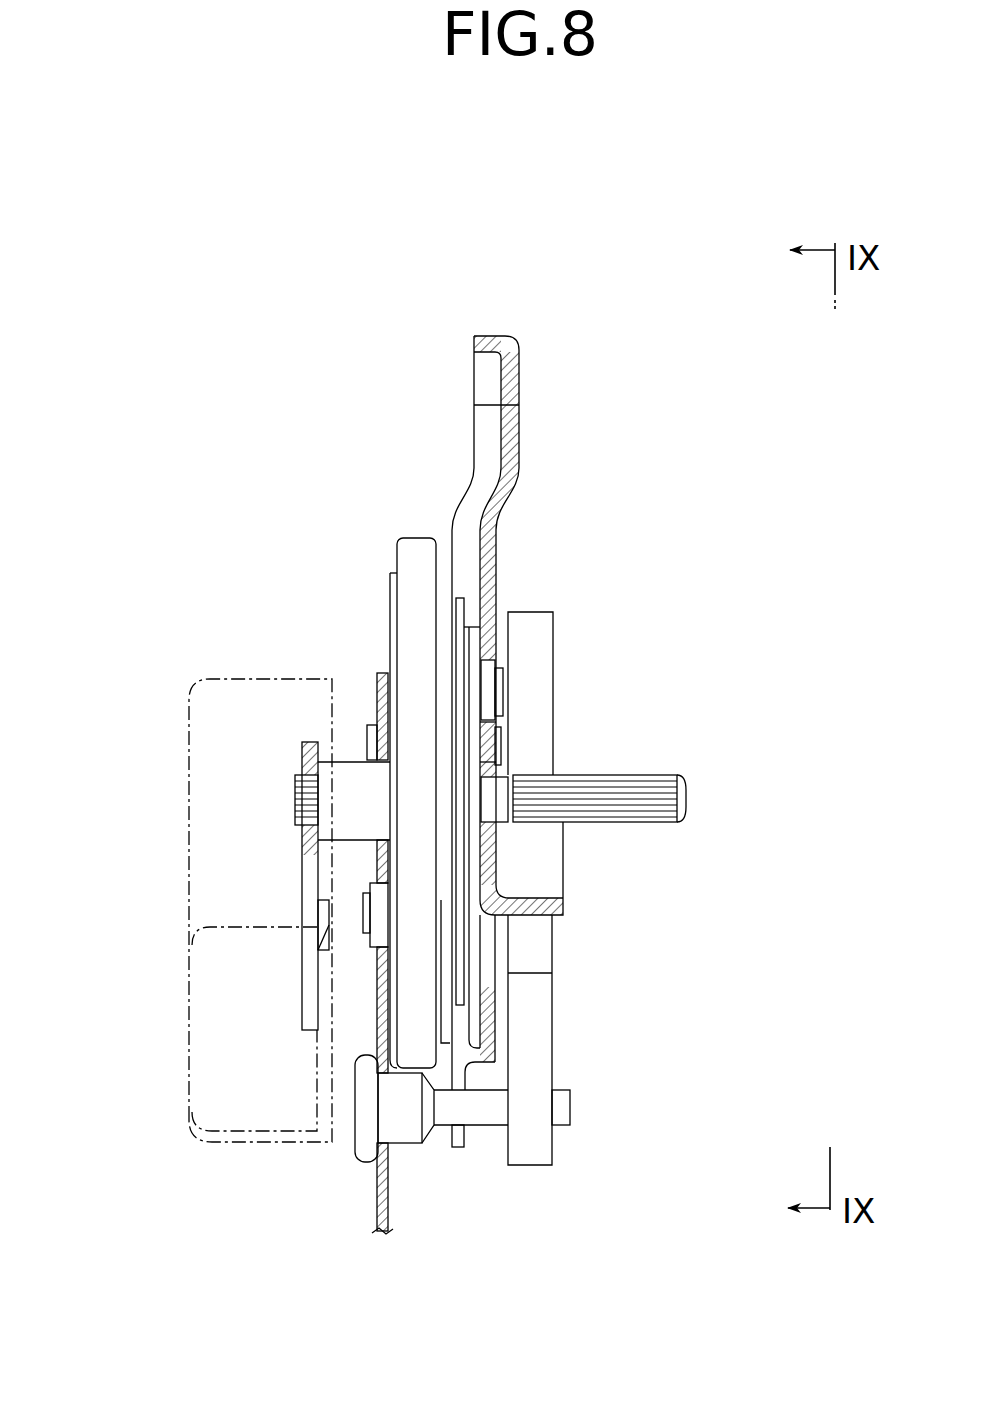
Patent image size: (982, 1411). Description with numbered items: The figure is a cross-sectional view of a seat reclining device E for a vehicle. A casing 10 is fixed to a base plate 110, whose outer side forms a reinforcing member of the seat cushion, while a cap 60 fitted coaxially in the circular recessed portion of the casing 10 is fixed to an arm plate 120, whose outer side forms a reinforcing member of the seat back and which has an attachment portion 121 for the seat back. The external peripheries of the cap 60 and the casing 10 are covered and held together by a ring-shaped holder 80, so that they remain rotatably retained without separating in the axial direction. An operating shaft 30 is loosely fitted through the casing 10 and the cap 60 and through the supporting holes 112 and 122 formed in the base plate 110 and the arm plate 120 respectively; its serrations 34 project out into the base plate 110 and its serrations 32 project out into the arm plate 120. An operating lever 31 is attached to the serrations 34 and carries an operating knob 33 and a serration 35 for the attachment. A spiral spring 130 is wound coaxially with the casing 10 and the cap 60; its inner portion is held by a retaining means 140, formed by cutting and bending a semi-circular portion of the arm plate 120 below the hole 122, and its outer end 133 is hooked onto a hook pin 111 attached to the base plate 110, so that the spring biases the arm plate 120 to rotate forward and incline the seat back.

The seat reclining device E is at (405, 480).
The casing 10 is at (384, 582).
The operating shaft 30 is at (697, 797).
The operating lever 31 is at (302, 965).
The serrations 32 is at (652, 775).
The operating knob 33 is at (189, 1078).
The serrations 34 is at (297, 775).
The serration 35 is at (295, 800).
The cap 60 is at (480, 601).
The ring-shaped holder 80 is at (417, 1027).
The base plate 110 is at (378, 1200).
The hook pin 111 is at (570, 1108).
The supporting hole 112 is at (383, 836).
The arm plate 120 is at (528, 380).
The attachment portion 121 is at (520, 482).
The supporting hole 122 is at (497, 768).
The spiral spring 130 is at (560, 647).
The outer end 133 is at (455, 1150).
The retaining means 140 is at (570, 911).